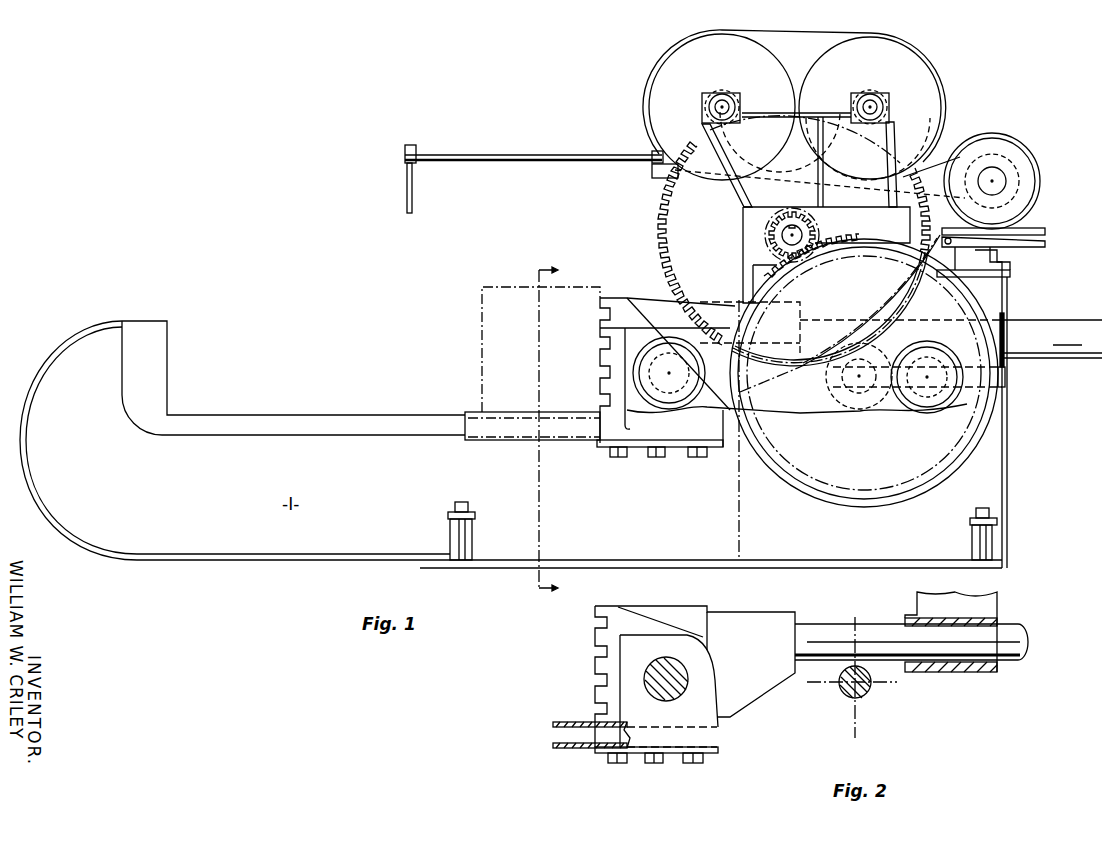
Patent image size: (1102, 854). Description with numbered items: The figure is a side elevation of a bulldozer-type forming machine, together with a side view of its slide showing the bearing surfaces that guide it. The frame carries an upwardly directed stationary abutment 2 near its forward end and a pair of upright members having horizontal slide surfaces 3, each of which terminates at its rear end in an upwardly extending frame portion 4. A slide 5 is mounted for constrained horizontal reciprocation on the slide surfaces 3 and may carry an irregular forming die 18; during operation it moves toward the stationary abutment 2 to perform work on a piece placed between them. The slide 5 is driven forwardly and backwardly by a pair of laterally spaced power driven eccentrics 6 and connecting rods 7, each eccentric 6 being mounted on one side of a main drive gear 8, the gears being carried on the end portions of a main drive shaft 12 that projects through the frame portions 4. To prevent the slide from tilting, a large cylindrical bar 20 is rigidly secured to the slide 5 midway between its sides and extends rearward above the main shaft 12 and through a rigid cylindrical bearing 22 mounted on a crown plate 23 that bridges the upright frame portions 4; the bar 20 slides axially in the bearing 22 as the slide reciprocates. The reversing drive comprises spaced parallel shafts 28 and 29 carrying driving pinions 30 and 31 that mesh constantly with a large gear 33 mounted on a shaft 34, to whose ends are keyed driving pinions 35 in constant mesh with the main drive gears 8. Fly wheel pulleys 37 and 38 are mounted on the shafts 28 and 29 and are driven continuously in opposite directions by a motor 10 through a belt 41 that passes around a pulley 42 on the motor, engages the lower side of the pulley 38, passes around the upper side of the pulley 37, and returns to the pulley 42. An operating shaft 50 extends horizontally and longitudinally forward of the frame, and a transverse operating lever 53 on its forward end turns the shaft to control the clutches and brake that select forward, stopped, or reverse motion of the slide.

In FIG. 1, the stationary abutment 2 is at (167, 358).
In FIG. 1, the slide surfaces 3 is at (468, 412).
In FIG. 2, the slide surfaces 3 is at (570, 722).
In FIG. 1, the upwardly extending frame portion 4 is at (743, 290).
In FIG. 1, the slide 5 is at (600, 366).
In FIG. 2, the slide 5 is at (595, 668).
In FIG. 1, the eccentrics 6 is at (928, 404).
In FIG. 1, the connecting rods 7 is at (807, 410).
In FIG. 1, the main drive gear 8 is at (857, 503).
In FIG. 1, the motor 10 is at (1020, 168).
In FIG. 1, the main drive shaft 12 is at (858, 395).
In FIG. 2, the main drive shaft 12 is at (866, 690).
In FIG. 1, the irregular forming die 18 is at (482, 309).
In FIG. 1, the bar 20 is at (1053, 339).
In FIG. 2, the bar 20 is at (911, 642).
In FIG. 1, the cylindrical bearing 22 is at (1004, 318).
In FIG. 2, the cylindrical bearing 22 is at (907, 620).
In FIG. 1, the crown plate 23 is at (1005, 380).
In FIG. 1, the shaft 28 is at (714, 108).
In FIG. 1, the shaft 29 is at (880, 108).
In FIG. 1, the driving pinion 30 is at (733, 93).
In FIG. 1, the driving pinion 31 is at (872, 93).
In FIG. 1, the gear 33 is at (660, 212).
In FIG. 1, the shaft 34 is at (782, 236).
In FIG. 1, the driving pinions 35 is at (778, 253).
In FIG. 1, the fly wheel pulley 37 is at (678, 60).
In FIG. 1, the fly wheel pulley 38 is at (918, 62).
In FIG. 1, the belt 41 is at (648, 102).
In FIG. 1, the pulley 42 is at (1012, 148).
In FIG. 1, the operating shaft 50 is at (497, 153).
In FIG. 1, the operating lever 53 is at (412, 205).